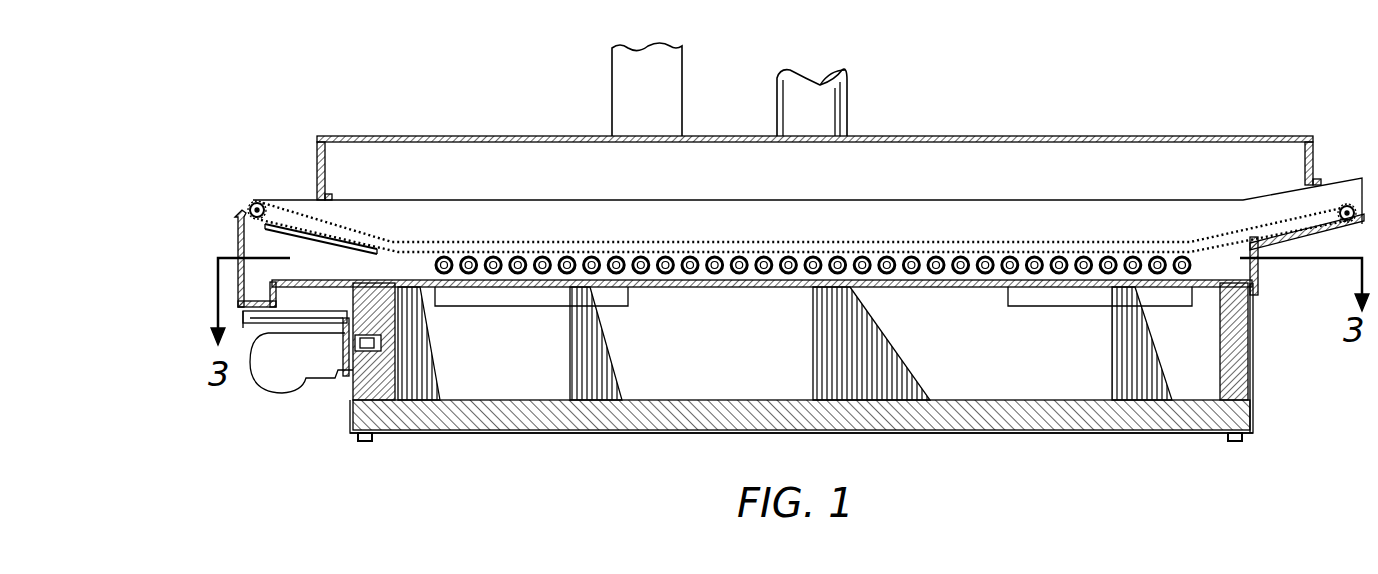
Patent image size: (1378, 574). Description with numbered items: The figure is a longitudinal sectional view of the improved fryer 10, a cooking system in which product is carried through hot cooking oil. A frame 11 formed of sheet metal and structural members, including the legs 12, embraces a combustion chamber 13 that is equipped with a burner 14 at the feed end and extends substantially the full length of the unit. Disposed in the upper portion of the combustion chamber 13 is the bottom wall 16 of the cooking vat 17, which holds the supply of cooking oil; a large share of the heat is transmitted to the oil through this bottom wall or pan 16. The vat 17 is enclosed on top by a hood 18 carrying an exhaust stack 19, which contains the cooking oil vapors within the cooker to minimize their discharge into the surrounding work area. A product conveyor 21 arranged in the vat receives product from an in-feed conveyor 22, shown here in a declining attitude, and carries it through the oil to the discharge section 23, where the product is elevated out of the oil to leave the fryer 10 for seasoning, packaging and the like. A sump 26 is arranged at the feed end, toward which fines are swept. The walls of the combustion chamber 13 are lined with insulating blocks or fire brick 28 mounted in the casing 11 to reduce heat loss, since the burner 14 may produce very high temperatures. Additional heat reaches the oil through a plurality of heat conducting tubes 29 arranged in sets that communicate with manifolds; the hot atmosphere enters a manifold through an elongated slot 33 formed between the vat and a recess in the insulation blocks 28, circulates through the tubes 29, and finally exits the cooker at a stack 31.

The fryer 10 is at (414, 494).
The frame 11 is at (1254, 425).
The legs 12 is at (1228, 438).
The combustion chamber 13 is at (762, 369).
The burner 14 is at (276, 372).
The bottom wall 16 is at (748, 294).
The cooking vat 17 is at (1259, 290).
The hood 18 is at (1313, 160).
The exhaust stack 19 is at (683, 74).
The product conveyor 21 is at (815, 240).
The in-feed conveyor 22 is at (378, 235).
The discharge section 23 is at (1210, 243).
The sump 26 is at (262, 292).
The insulating blocks 28 is at (526, 400).
The heat conducting tubes 29 is at (716, 256).
The stack 31 is at (848, 94).
The elongated slot 33 is at (545, 304).